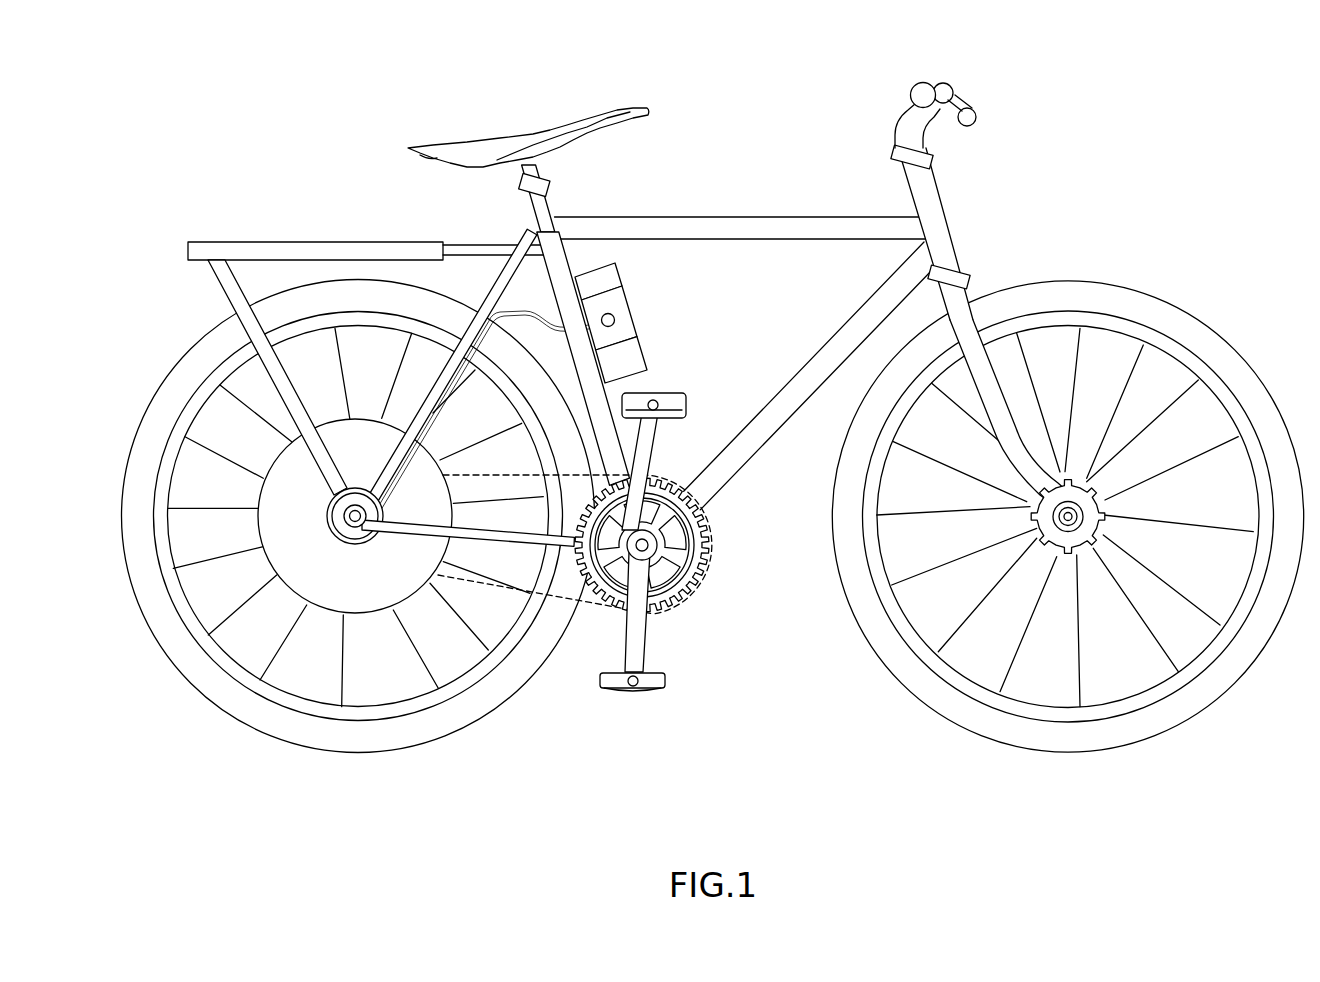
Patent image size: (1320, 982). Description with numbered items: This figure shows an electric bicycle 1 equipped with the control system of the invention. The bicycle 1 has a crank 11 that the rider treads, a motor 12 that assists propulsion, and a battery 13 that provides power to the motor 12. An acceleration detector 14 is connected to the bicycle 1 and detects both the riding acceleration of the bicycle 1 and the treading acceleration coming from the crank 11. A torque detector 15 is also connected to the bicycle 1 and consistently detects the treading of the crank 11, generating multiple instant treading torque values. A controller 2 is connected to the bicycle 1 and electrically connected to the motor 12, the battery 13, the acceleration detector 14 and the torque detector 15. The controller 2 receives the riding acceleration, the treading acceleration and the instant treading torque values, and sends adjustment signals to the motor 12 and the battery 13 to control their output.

The bicycle 1 is at (368, 124).
The controller 2 is at (618, 303).
The crank 11 is at (635, 645).
The motor 12 is at (288, 482).
The battery 13 is at (632, 360).
The acceleration detector 14 is at (597, 280).
The torque detector 15 is at (634, 687).